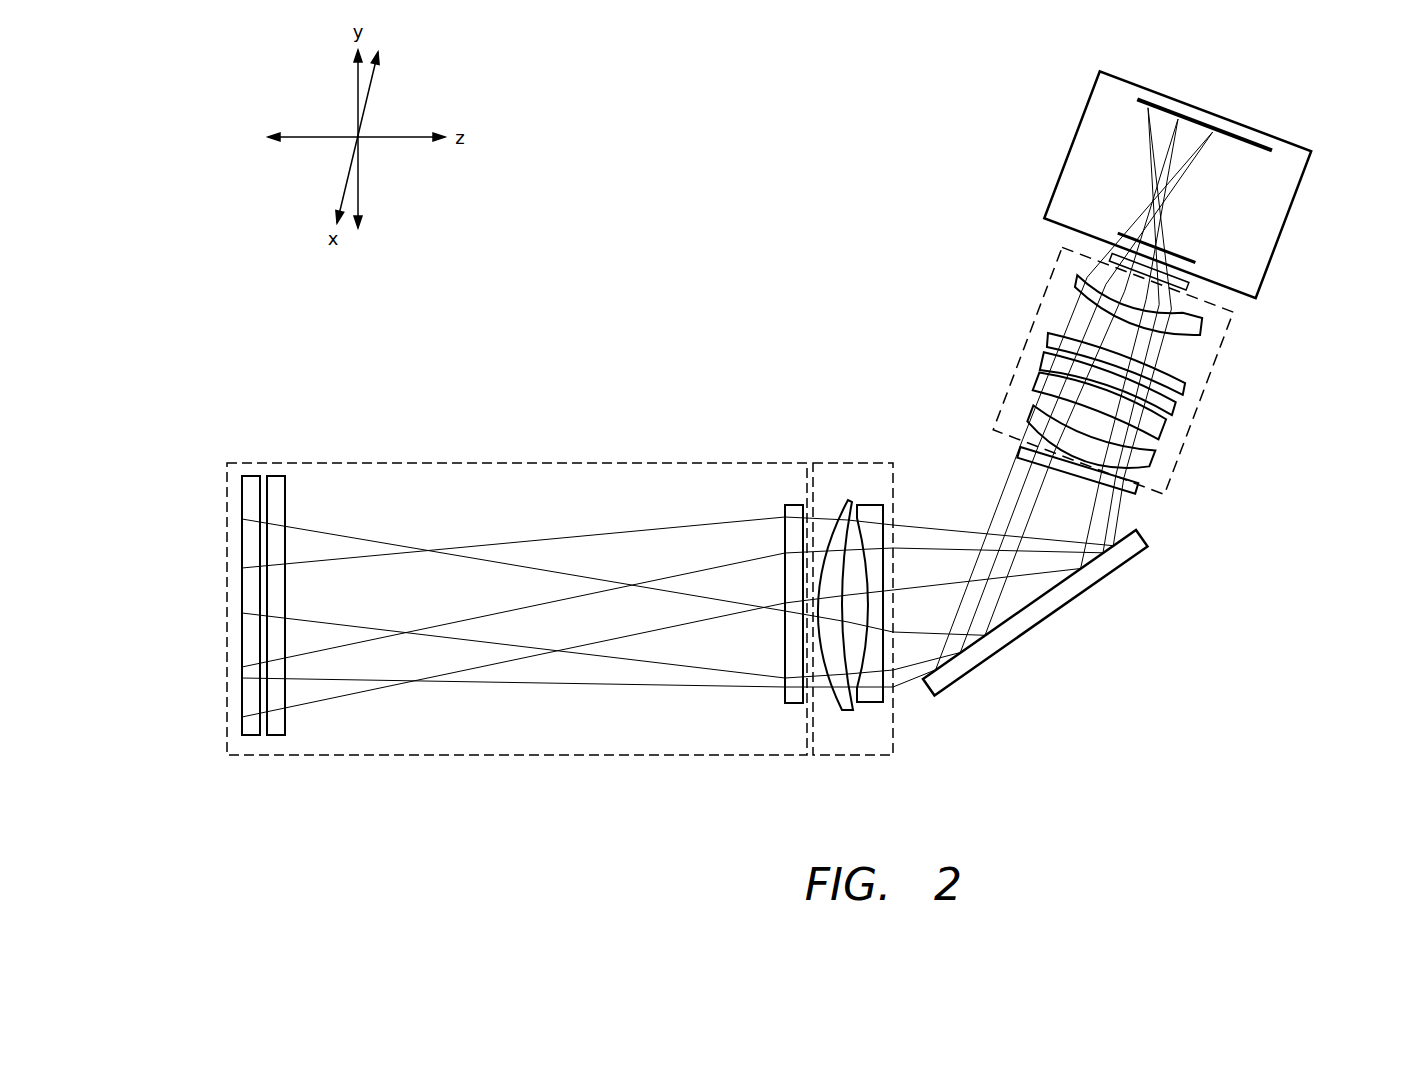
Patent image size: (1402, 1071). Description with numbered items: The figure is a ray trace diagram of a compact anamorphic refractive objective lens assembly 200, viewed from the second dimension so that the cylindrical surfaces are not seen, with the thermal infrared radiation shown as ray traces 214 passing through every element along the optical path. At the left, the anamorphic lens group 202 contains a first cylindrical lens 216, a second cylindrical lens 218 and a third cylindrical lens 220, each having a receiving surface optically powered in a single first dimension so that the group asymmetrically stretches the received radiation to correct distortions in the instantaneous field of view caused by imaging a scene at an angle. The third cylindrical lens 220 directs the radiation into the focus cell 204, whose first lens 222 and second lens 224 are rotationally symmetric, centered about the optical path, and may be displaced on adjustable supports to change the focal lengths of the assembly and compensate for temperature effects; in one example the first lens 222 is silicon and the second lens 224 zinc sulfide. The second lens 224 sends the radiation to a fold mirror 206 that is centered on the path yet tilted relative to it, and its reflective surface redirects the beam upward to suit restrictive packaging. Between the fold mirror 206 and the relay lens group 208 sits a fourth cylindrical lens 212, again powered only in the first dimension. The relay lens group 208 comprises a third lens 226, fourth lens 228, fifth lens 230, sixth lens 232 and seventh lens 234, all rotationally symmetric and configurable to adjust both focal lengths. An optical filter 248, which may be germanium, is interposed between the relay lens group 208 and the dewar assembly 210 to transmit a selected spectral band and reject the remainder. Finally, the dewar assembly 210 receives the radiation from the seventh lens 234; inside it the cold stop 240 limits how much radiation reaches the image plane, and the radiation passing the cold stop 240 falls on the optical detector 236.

The refractive objective lens assembly 200 is at (733, 160).
The anamorphic lens group 202 is at (578, 462).
The focus cell 204 is at (838, 757).
The fold mirror 206 is at (1040, 623).
The relay lens group 208 is at (1040, 311).
The dewar assembly 210 is at (1074, 140).
The fourth cylindrical lens 212 is at (1133, 498).
The ray traces 214 is at (633, 527).
The first cylindrical lens 216 is at (248, 474).
The second cylindrical lens 218 is at (278, 474).
The third cylindrical lens 220 is at (788, 504).
The first lens 222 is at (842, 498).
The second lens 224 is at (870, 700).
The third lens 226 is at (1030, 408).
The fourth lens 228 is at (1165, 438).
The fifth lens 230 is at (1045, 340).
The sixth lens 232 is at (1188, 402).
The seventh lens 234 is at (1080, 278).
The optical detector 236 is at (1272, 150).
The cold stop 240 is at (1195, 262).
The optical filter 248 is at (1200, 286).